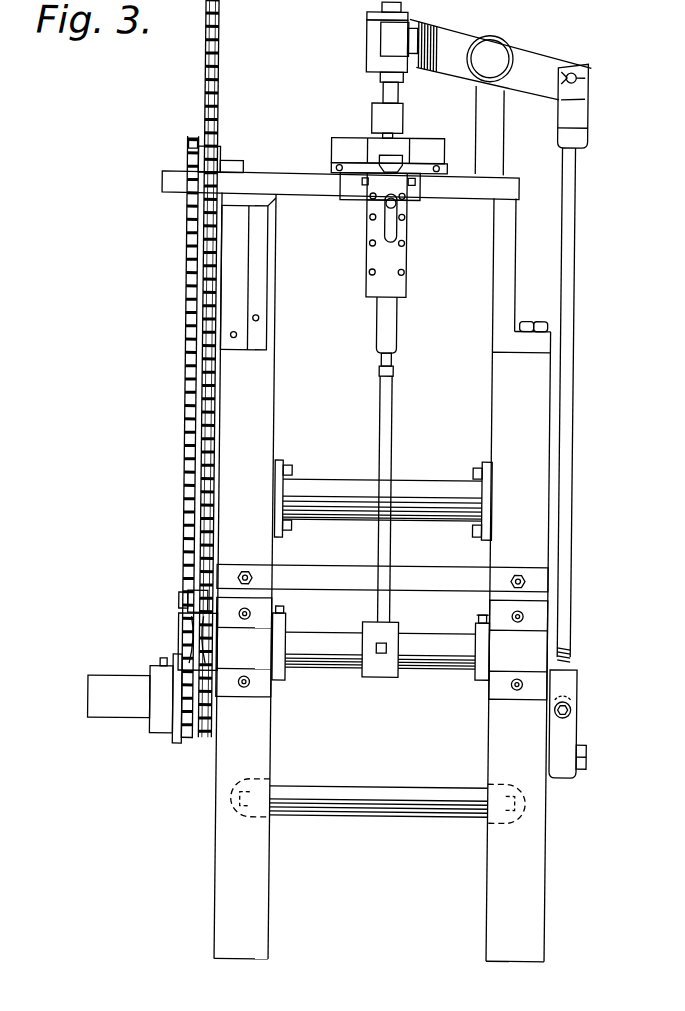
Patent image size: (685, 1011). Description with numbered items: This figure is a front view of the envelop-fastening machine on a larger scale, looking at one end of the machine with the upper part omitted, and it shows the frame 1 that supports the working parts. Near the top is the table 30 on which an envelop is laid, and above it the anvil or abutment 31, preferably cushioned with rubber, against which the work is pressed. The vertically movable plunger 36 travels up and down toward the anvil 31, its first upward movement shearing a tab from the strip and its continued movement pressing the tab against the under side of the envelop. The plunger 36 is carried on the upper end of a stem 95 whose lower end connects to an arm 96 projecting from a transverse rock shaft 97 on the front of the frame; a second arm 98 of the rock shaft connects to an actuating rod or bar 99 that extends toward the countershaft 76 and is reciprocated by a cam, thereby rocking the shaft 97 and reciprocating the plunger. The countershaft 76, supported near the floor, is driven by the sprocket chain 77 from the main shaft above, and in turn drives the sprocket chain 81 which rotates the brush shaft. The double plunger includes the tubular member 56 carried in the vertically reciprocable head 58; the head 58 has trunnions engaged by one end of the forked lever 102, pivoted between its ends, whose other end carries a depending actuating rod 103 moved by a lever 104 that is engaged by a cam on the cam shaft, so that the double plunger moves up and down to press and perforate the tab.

The frame 1 is at (519, 446).
The table 30 is at (357, 171).
The anvil or abutment 31 is at (385, 161).
The plunger 36 is at (373, 257).
The tubular member 56 is at (378, 90).
The head 58 is at (366, 33).
The countershaft 76 is at (91, 682).
The sprocket chain 77 is at (219, 61).
The sprocket chain 81 is at (179, 301).
The stem 95 is at (385, 430).
The arm 96 is at (378, 667).
The rock shaft 97 is at (458, 655).
The second arm 98 is at (180, 621).
The actuating rod or bar 99 is at (180, 601).
The forked lever 102 is at (539, 61).
The actuating rod 103 is at (569, 268).
The lever 104 is at (582, 741).